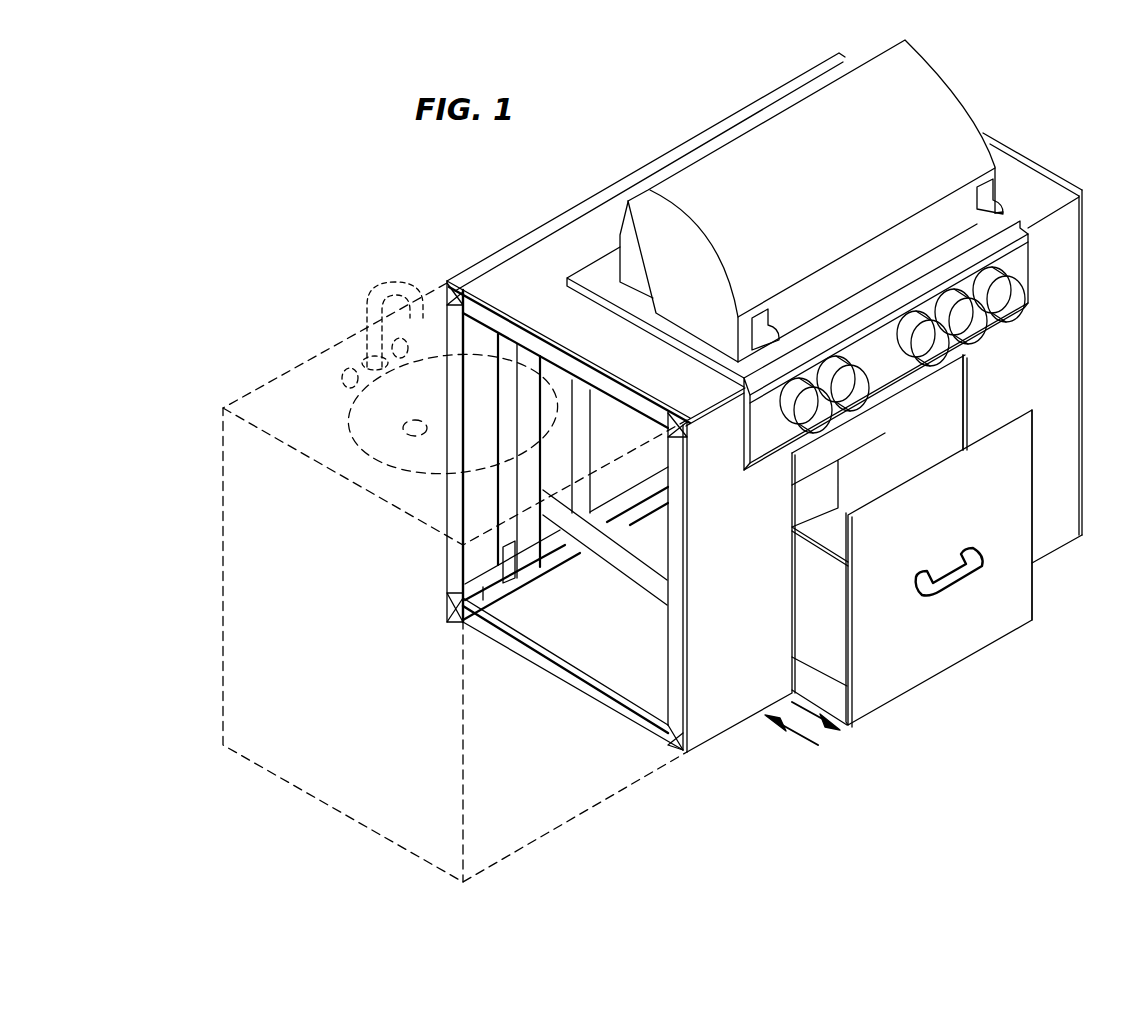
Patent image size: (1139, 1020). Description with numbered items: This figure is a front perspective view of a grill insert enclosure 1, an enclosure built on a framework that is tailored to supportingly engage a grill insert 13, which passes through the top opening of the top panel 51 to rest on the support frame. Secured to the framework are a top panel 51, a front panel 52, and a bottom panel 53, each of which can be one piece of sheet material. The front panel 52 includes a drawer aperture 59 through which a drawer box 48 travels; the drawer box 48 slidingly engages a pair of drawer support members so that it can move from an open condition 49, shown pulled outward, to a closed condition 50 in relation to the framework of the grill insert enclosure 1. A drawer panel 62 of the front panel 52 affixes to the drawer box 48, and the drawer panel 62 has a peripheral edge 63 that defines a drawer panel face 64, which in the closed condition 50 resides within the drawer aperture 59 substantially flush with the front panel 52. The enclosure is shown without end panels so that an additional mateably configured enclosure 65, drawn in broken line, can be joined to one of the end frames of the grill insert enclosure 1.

The grill insert enclosure 1 is at (1043, 108).
The grill insert 13 is at (847, 171).
The drawer box 48 is at (1018, 632).
The open condition 49 is at (816, 711).
The closed condition 50 is at (791, 738).
The top panel 51 is at (568, 515).
The front panel 52 is at (878, 520).
The bottom panel 53 is at (565, 671).
The drawer aperture 59 is at (958, 398).
The drawer panel 62 is at (939, 568).
The peripheral edge 63 is at (1034, 588).
The drawer panel face 64 is at (939, 568).
The mateably configured enclosure 65 is at (348, 357).